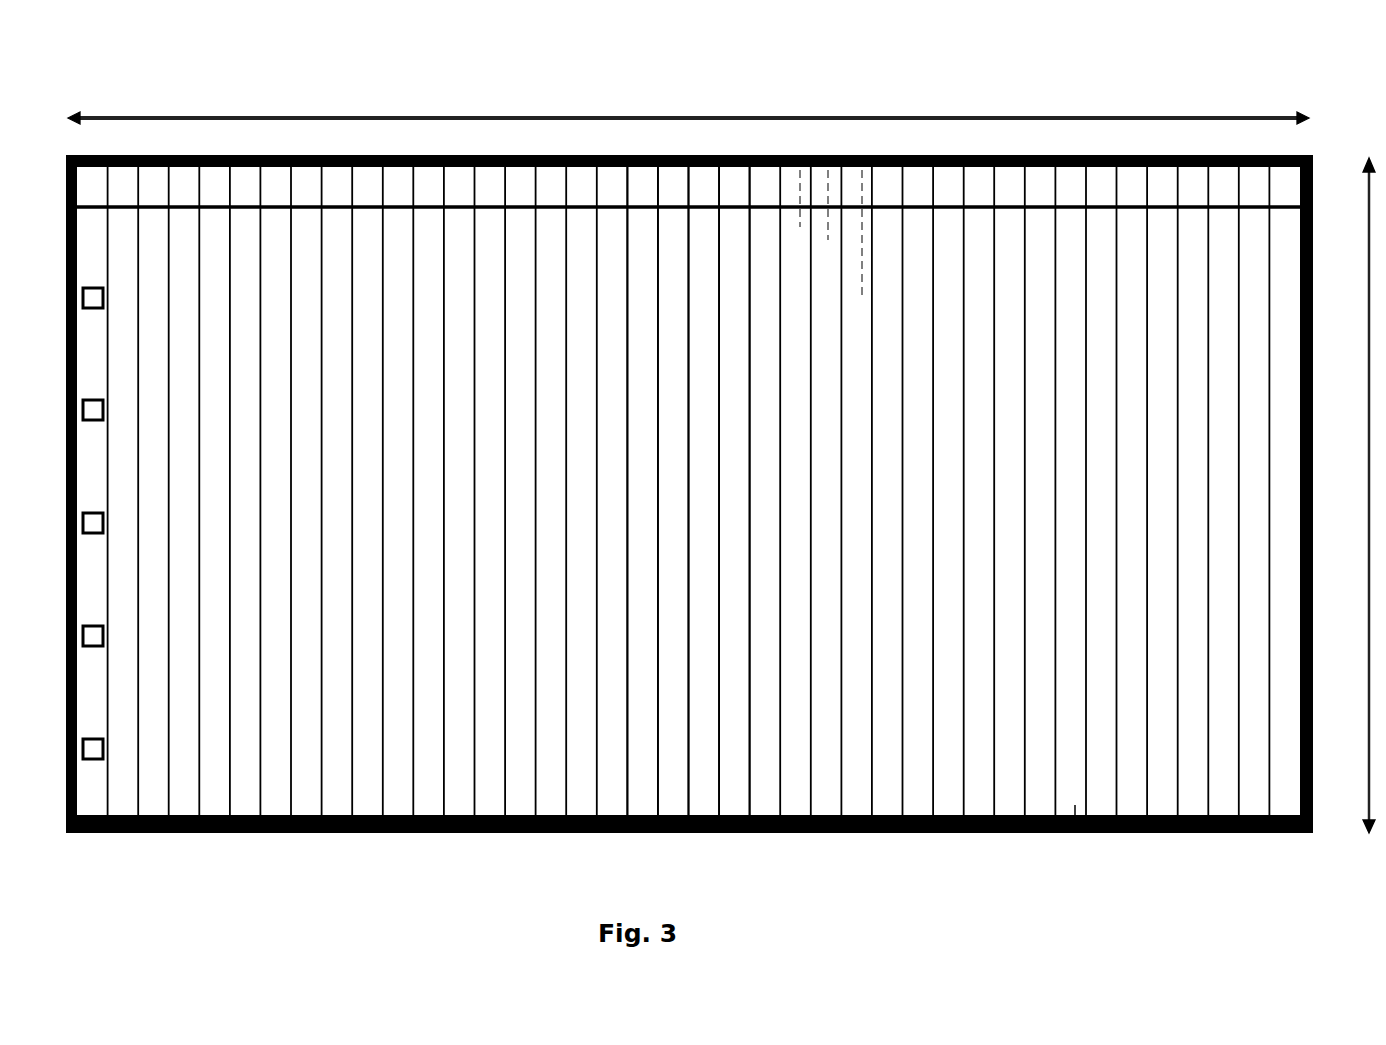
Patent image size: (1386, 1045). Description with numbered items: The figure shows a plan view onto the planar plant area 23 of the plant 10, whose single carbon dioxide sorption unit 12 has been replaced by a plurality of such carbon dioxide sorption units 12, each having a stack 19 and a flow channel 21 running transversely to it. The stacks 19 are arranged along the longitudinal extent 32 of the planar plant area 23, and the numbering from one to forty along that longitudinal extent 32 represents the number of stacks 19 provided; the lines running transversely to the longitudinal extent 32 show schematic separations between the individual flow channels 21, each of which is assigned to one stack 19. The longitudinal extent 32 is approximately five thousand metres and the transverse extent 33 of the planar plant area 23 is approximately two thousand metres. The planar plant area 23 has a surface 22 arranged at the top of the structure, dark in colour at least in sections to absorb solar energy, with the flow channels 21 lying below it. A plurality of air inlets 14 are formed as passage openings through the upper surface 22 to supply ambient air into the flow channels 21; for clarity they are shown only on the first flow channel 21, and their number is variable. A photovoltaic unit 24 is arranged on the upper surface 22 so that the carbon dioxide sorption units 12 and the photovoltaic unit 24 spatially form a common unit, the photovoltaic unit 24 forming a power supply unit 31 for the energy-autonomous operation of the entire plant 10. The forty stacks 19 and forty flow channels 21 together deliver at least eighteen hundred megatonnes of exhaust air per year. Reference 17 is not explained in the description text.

The plant 10 is at (1245, 125).
The carbon dioxide sorption unit 12 is at (373, 167).
The air inlets 14 is at (103, 523).
The first group of columns 17 is at (586, 154).
The stack 19 is at (735, 154).
The flow channel 21 is at (852, 157).
The surface 22 is at (1075, 837).
The planar plant area 23 is at (178, 108).
The photovoltaic unit 24 is at (1249, 550).
The power supply unit 31 is at (1177, 767).
The longitudinal extent 32 is at (1063, 112).
The transverse extent 33 is at (1340, 222).